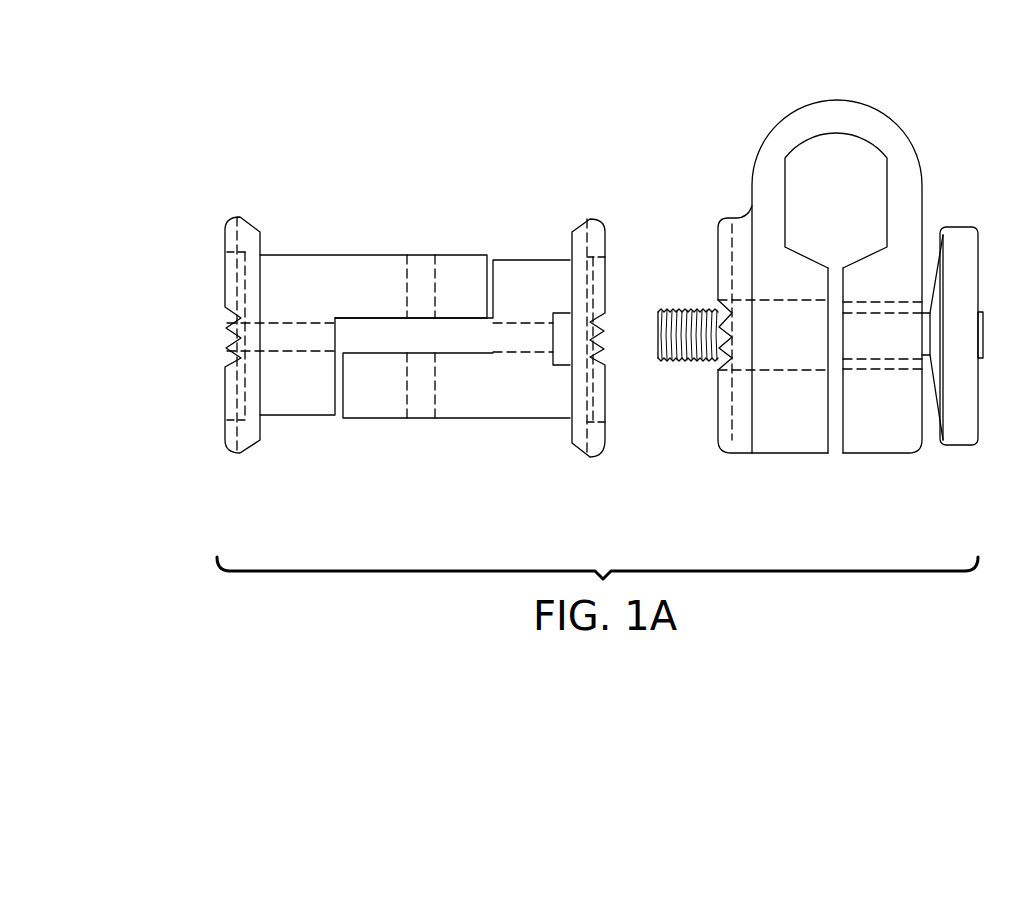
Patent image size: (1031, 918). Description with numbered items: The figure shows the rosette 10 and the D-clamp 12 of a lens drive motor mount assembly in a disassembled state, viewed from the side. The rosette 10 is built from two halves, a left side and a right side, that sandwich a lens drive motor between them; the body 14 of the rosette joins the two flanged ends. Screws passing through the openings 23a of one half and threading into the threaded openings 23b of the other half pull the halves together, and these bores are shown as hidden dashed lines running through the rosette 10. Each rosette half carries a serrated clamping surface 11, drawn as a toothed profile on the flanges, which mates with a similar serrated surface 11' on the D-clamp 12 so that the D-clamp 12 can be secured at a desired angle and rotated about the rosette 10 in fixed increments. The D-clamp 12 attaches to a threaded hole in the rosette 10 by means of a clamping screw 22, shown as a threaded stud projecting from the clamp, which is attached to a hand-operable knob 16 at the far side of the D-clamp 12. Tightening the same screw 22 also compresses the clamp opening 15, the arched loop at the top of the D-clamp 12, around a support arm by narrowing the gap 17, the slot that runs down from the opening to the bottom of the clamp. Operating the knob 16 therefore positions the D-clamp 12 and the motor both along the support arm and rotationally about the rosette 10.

The rosette 10 is at (493, 436).
The clamping surface 11 is at (406, 321).
The mating surface 11' is at (760, 277).
The D-clamp 12 is at (874, 461).
The body 14 is at (422, 248).
The clamp opening 15 is at (878, 125).
The hand-operable knob 16 is at (978, 215).
The gap 17 is at (823, 458).
The clamping screw 22 is at (688, 372).
The openings 23a is at (527, 325).
The threaded openings 23b is at (282, 325).